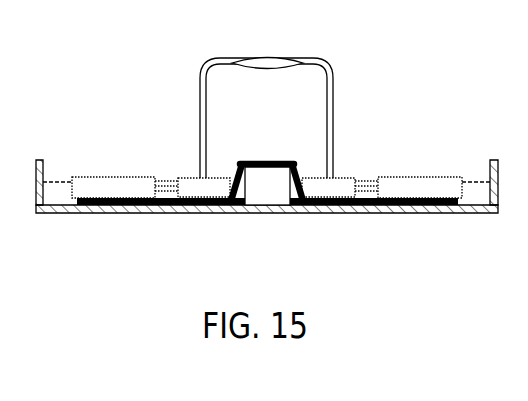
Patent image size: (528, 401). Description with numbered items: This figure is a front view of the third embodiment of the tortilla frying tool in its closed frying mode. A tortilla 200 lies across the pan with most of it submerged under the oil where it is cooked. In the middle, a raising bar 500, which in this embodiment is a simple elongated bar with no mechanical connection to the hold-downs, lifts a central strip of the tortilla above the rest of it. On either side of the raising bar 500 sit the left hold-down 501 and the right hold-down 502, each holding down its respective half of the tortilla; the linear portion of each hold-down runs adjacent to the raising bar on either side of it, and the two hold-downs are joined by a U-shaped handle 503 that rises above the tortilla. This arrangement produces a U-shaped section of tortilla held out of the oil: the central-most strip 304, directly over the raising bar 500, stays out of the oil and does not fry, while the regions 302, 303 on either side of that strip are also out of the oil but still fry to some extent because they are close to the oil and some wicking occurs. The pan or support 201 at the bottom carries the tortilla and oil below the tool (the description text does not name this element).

The tortilla 200 is at (165, 208).
The base plate 201 is at (430, 212).
The region on one side of the central-most strip 302 is at (297, 176).
The region on the other side of the central-most strip 303 is at (237, 176).
The central-most strip 304 is at (262, 161).
The raising bar 500 is at (265, 180).
The left hold-down 501 is at (147, 131).
The right hold-down 502 is at (368, 128).
The U-shaped handle 503 is at (265, 57).